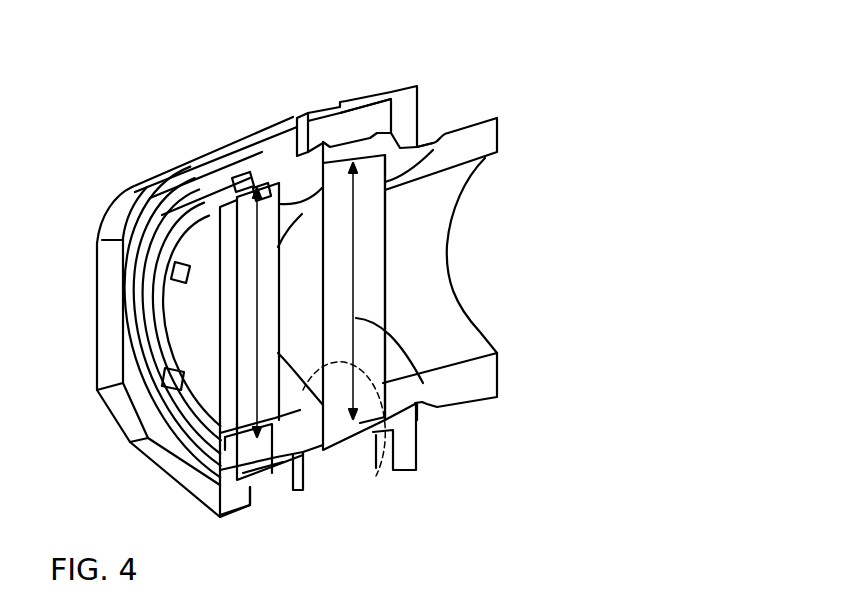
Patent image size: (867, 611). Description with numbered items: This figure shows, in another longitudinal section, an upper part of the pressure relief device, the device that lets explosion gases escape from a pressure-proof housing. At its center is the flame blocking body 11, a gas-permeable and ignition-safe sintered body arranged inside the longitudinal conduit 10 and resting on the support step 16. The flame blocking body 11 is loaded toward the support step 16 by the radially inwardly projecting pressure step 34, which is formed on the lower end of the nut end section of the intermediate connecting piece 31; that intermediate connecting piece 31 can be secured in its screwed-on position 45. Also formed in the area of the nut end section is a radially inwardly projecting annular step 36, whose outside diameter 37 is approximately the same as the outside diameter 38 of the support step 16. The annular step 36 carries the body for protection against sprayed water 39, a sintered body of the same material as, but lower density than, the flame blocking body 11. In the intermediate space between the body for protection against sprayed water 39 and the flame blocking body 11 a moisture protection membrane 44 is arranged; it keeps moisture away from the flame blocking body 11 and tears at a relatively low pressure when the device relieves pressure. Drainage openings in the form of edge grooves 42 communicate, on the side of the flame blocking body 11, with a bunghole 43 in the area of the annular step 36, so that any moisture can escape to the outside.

The longitudinal conduit 10 is at (445, 312).
The flame blocking body 11 is at (372, 252).
The support step 16 is at (447, 138).
The intermediate connecting piece 31 is at (358, 99).
The screwed-on position 45 is at (365, 106).
The pressure step 34 is at (318, 180).
The outside diameter 37 is at (263, 293).
The edge grooves 42 is at (243, 180).
The annular step 36 is at (289, 424).
The body for protection against sprayed water 39 is at (265, 405).
The bunghole 43 is at (322, 456).
The outside diameter 38 is at (423, 405).
The moisture protection membrane 44 is at (376, 476).